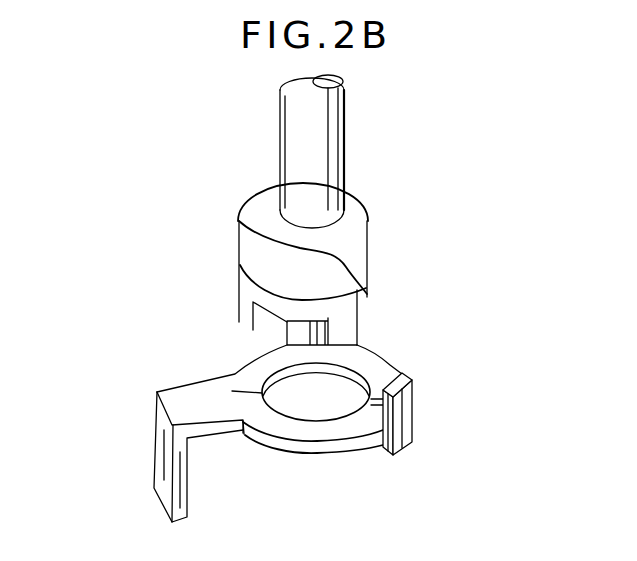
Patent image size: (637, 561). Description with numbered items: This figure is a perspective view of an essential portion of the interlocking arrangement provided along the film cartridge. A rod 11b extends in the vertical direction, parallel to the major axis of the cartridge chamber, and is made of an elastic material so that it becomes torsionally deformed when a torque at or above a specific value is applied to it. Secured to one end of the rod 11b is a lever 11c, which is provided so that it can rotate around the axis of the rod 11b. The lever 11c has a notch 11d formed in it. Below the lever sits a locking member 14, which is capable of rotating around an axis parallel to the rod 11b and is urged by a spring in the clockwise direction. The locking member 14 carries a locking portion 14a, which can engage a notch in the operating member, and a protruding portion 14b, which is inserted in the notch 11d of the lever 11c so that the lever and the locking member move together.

The rod 11b is at (338, 125).
The lever 11c is at (253, 203).
The notch 11d is at (252, 303).
The locking member 14 is at (310, 434).
The locking portion 14a is at (154, 436).
The protruding portion 14b is at (287, 330).